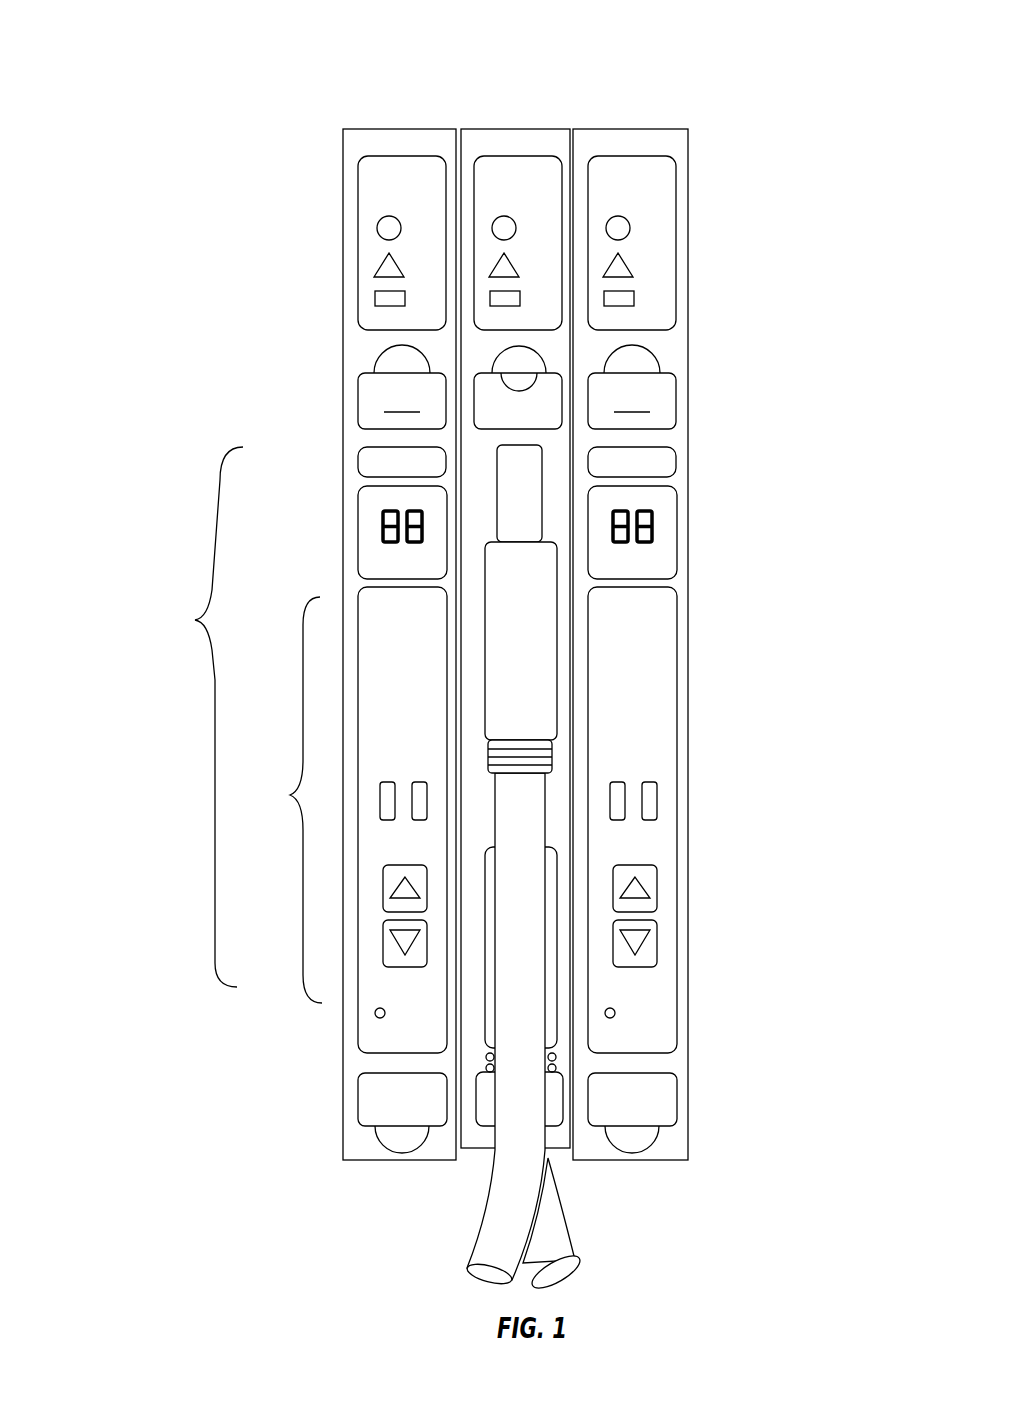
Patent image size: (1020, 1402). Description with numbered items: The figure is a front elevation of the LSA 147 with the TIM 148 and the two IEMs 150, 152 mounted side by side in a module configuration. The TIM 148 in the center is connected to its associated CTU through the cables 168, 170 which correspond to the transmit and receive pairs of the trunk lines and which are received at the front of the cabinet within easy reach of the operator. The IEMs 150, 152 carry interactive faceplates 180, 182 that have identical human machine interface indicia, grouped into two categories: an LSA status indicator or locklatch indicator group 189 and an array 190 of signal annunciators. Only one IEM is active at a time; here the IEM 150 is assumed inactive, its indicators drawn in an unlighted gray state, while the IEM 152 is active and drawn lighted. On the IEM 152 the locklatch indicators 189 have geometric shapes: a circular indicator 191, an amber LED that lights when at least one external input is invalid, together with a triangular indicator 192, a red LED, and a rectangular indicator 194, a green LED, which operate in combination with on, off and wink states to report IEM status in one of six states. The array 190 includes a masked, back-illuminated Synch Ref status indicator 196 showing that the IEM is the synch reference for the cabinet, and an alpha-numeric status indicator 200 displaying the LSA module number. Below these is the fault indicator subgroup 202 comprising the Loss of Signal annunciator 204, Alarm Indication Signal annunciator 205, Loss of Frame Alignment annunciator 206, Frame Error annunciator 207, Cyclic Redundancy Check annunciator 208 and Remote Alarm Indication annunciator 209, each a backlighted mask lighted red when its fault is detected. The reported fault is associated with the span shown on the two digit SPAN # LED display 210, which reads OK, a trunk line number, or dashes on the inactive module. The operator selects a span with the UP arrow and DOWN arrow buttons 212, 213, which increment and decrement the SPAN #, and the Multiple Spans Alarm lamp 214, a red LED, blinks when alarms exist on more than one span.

The LSA 147 is at (647, 67).
The TIM 148 is at (548, 128).
The IEM 150 is at (403, 128).
The IEM 152 is at (648, 128).
The cable 168 is at (503, 1209).
The cable 170 is at (547, 1225).
The faceplate 180 is at (402, 387).
The faceplate 182 is at (632, 387).
The LSA status indicator 189 is at (322, 232).
The array of signal annunciators 190 is at (195, 620).
The circular indicator 191 is at (630, 222).
The triangular indicator 192 is at (632, 265).
The rectangular indicator 194 is at (634, 295).
The status indicator 196 is at (680, 462).
The status indicator 200 is at (682, 501).
The fault indicator subgroup 202 is at (288, 793).
The Loss of Signal annunciator 204 is at (664, 628).
The Alarm Indication Signal annunciator 205 is at (664, 653).
The Loss of Frame Alignment annunciator 206 is at (664, 675).
The Frame Error annunciator 207 is at (664, 696).
The Cyclic Redundancy Check annunciator 208 is at (664, 717).
The Remote Alarm Indication annunciator 209 is at (666, 742).
The SPAN # display 210 is at (664, 798).
The UP arrow button 212 is at (664, 887).
The DOWN arrow button 213 is at (664, 945).
The Multiple Spans Alarm lamp 214 is at (676, 1016).